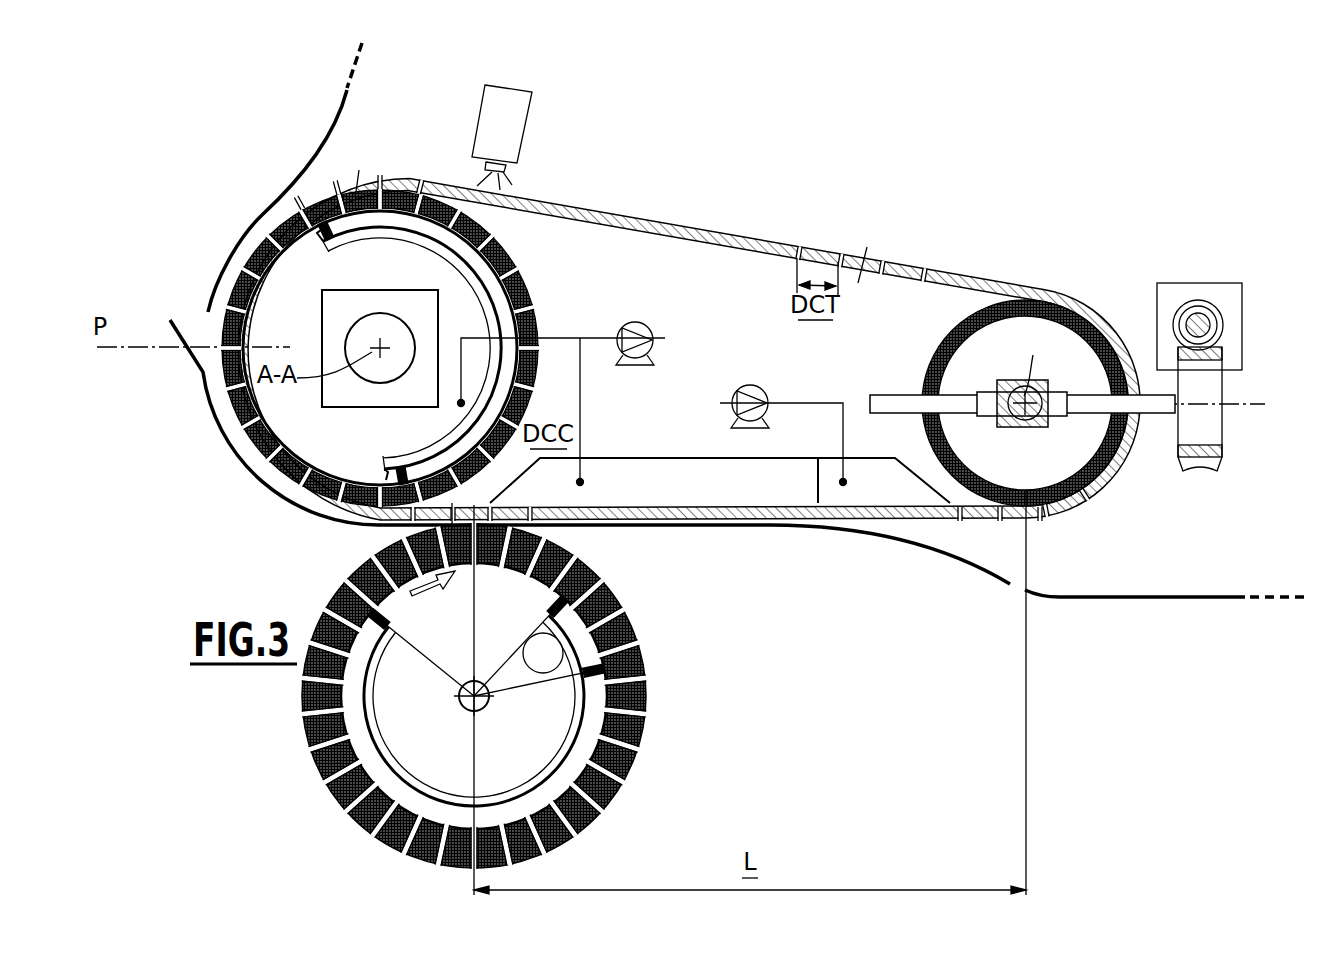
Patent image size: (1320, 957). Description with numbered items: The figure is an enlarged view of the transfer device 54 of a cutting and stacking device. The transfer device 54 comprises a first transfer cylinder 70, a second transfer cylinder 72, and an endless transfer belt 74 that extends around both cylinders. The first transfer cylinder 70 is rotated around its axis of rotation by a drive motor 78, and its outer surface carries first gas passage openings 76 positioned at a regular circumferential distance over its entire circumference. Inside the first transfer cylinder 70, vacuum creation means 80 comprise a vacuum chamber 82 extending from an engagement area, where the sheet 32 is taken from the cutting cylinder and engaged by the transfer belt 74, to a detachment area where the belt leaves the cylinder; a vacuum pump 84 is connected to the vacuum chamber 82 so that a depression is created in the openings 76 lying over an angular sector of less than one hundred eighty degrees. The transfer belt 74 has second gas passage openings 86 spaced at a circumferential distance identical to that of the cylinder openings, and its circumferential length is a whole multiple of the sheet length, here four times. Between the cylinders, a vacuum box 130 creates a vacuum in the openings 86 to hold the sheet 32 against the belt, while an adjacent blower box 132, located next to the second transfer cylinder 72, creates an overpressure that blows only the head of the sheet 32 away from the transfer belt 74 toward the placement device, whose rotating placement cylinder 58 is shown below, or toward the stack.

The transfer device 54 is at (1031, 152).
The transfer belt 74 is at (699, 233).
The gas passage openings 86 is at (422, 177).
The first transfer cylinder 70 is at (416, 348).
The first gas passage openings 76 is at (530, 298).
The drive motor 78 is at (322, 332).
The vacuum chamber 82 is at (360, 281).
The vacuum pump 84 is at (645, 323).
The vacuum creation means 80 is at (592, 349).
The vacuum box 130 is at (668, 494).
The blower box 132 is at (857, 494).
The second transfer cylinder 72 is at (930, 357).
The sheet 32 is at (633, 527).
The placement cylinder 58 is at (328, 785).